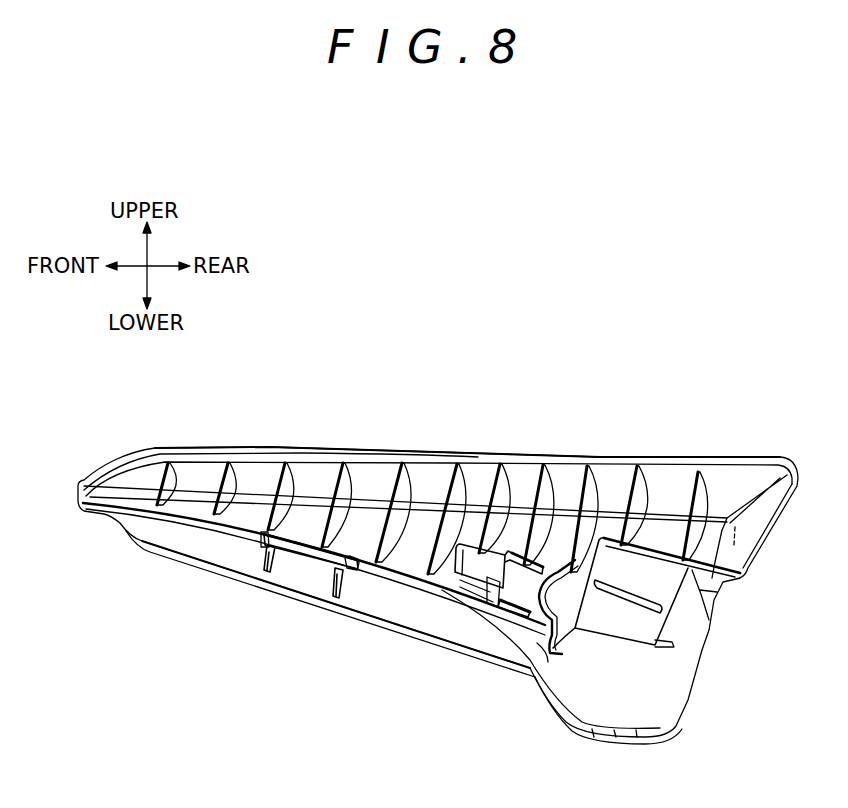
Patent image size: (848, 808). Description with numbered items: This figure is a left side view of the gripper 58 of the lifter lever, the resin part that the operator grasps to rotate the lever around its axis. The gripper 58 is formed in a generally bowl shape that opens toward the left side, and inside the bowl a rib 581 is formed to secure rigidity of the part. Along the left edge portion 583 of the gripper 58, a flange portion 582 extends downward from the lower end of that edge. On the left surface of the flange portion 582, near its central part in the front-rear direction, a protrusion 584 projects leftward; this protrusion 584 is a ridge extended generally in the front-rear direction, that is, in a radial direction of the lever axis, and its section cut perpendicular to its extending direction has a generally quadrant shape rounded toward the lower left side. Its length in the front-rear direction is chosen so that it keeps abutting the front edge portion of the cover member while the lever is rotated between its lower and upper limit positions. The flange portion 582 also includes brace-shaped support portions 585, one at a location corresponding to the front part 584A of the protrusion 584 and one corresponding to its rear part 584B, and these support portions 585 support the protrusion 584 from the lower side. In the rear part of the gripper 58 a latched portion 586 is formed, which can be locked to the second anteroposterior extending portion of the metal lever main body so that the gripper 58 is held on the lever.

The gripper 58 is at (282, 418).
The left edge portion 583 is at (368, 452).
The flange portion 582 is at (166, 540).
The rib 581 is at (506, 543).
The latched portion 586 is at (564, 503).
The protrusion 584 is at (359, 574).
The front part of the protrusion 584A is at (272, 553).
The rear part of the protrusion 584B is at (347, 570).
The support portions 585 is at (266, 552).